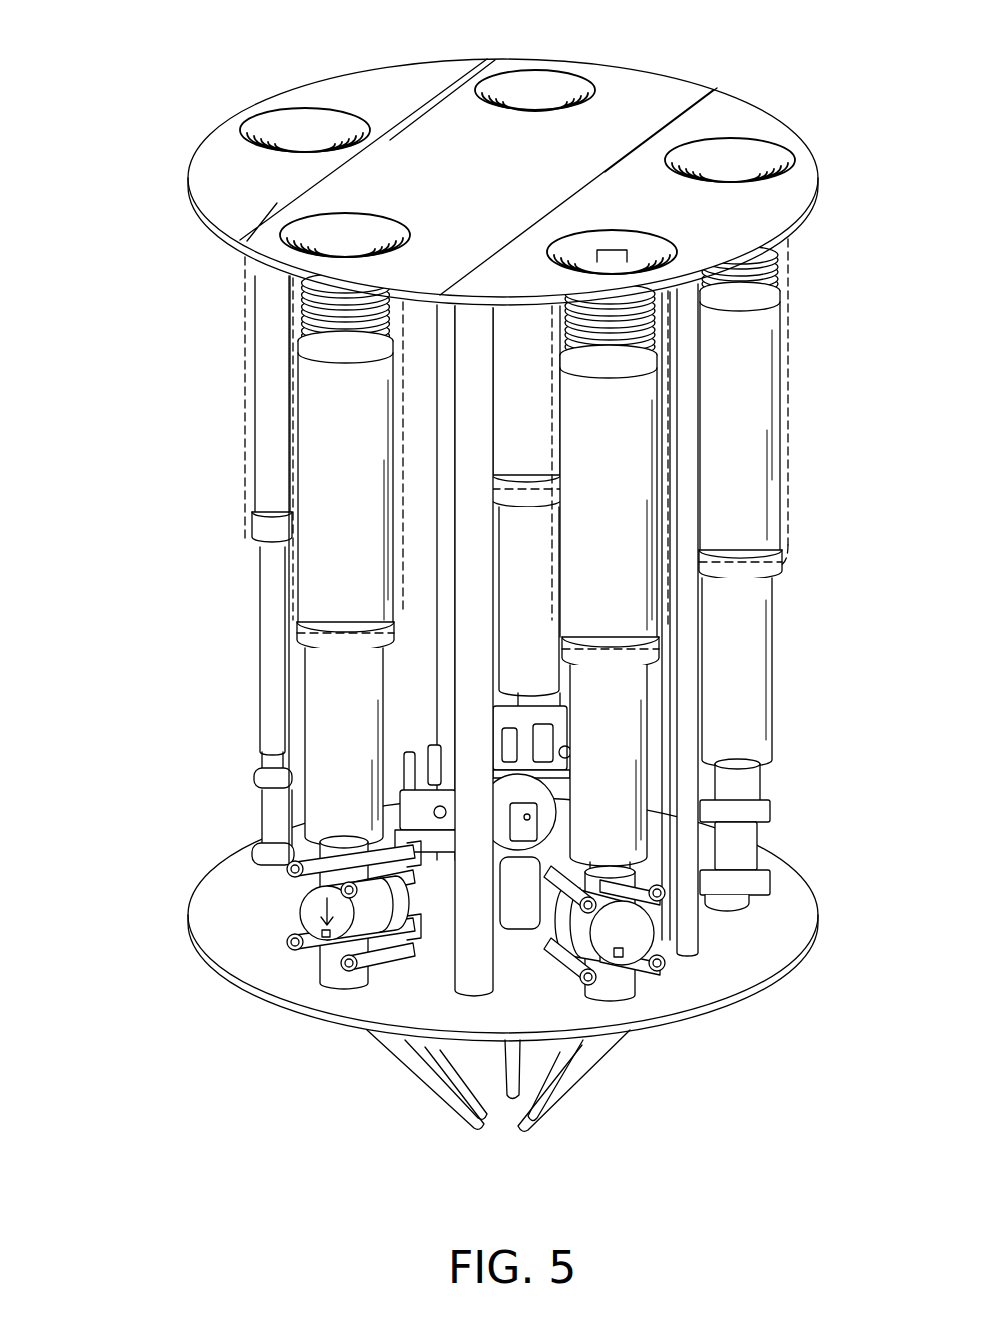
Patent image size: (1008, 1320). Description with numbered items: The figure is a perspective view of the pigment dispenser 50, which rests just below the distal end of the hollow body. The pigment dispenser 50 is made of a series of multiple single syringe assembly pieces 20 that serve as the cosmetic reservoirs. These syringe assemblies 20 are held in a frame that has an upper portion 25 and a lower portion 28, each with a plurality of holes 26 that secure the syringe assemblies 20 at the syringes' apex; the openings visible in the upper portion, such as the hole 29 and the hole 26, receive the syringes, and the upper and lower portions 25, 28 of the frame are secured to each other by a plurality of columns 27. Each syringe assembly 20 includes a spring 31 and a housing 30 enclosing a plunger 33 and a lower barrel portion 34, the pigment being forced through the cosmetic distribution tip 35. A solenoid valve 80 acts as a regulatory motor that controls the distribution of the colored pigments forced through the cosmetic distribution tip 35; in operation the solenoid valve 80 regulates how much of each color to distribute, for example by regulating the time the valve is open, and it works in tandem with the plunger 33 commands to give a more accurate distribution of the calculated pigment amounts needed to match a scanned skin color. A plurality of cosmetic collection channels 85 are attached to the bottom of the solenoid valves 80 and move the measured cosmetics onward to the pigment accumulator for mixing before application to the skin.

The single syringe assembly piece 20 is at (790, 458).
The upper portion of the frame 25 is at (504, 160).
The hole 26 is at (771, 168).
The column 27 is at (683, 929).
The lower portion of the frame 28 is at (786, 966).
The opening in top plate 29 is at (253, 141).
The cylinder housing outline 30 is at (787, 358).
The spring 31 is at (294, 311).
The plunger 33 is at (313, 603).
The lower cylinder body 34 is at (332, 745).
The cosmetic distribution tip 35 is at (746, 770).
The pigment dispenser 50 is at (138, 240).
The solenoid valve 80 is at (300, 920).
The cosmetic collection channel 85 is at (598, 1060).